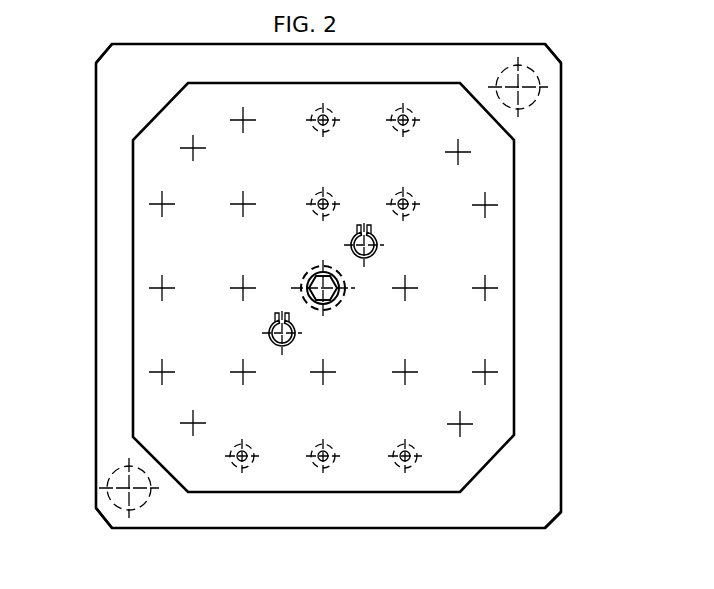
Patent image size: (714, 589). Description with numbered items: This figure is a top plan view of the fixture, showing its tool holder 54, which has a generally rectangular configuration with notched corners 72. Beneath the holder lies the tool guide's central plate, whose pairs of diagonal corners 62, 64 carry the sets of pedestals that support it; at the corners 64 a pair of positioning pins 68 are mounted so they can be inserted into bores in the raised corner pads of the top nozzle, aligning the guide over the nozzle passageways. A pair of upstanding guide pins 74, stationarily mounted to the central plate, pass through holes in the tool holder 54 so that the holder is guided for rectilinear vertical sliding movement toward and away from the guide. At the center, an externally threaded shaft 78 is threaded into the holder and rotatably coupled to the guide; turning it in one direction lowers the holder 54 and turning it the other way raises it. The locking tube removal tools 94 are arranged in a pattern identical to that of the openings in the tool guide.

The tool holder 54 is at (519, 317).
The diagonal corners 62 is at (100, 55).
The diagonal corners 64 is at (555, 55).
The positioning pins 68 is at (533, 82).
The notched corners 72 is at (150, 122).
The guide pins 74 is at (377, 241).
The central externally threaded shaft 78 is at (345, 293).
The locking tube removal tools 94 is at (372, 181).